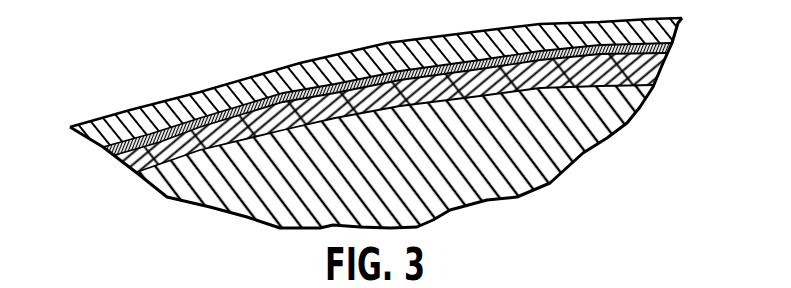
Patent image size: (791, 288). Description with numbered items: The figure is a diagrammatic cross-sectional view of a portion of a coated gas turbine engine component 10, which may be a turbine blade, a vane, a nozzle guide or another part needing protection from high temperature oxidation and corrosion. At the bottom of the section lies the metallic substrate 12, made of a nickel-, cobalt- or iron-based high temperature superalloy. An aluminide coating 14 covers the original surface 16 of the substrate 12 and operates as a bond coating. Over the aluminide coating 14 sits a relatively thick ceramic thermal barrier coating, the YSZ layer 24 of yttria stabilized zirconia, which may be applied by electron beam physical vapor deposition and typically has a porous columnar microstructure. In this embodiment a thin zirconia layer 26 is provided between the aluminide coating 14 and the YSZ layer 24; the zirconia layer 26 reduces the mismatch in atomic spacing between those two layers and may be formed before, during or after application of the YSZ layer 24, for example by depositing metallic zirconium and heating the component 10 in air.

The gas turbine engine component 10 is at (158, 38).
The metallic substrate 12 is at (630, 100).
The aluminide coating 14 is at (647, 68).
The original surface 16 is at (282, 129).
The YSZ layer 24 is at (683, 19).
The zirconia layer 26 is at (660, 51).